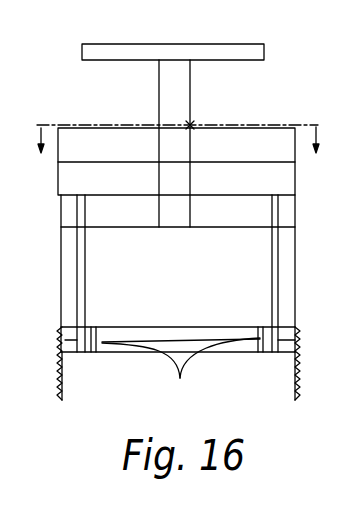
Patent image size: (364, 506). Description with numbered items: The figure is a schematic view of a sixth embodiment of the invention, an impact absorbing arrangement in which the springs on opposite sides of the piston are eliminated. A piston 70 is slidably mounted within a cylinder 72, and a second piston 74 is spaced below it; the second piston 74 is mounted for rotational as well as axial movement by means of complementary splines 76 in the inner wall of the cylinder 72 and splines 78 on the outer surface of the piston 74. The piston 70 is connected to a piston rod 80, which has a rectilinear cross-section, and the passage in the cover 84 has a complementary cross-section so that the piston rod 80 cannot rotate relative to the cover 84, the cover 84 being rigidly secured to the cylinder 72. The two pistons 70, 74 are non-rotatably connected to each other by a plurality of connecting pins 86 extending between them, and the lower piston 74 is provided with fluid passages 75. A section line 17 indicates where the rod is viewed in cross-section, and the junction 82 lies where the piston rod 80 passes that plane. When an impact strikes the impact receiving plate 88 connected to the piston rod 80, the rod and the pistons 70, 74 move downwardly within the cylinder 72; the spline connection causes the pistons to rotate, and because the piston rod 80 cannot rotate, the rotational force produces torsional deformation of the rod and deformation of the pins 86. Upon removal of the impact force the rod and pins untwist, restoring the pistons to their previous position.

The impact receiving plate 88 is at (110, 44).
The piston rod 80 is at (190, 85).
The stem bore 82 is at (190, 125).
The section line 17- 17 is at (179, 139).
The cover 84 is at (265, 150).
The piston 70 is at (97, 228).
The cylinder 72 is at (62, 283).
The connecting pins 86 is at (85, 287).
The second piston 74 is at (196, 327).
The splines 78 is at (63, 345).
The complementary splines 76 is at (65, 370).
The fluid passages 75 is at (181, 378).